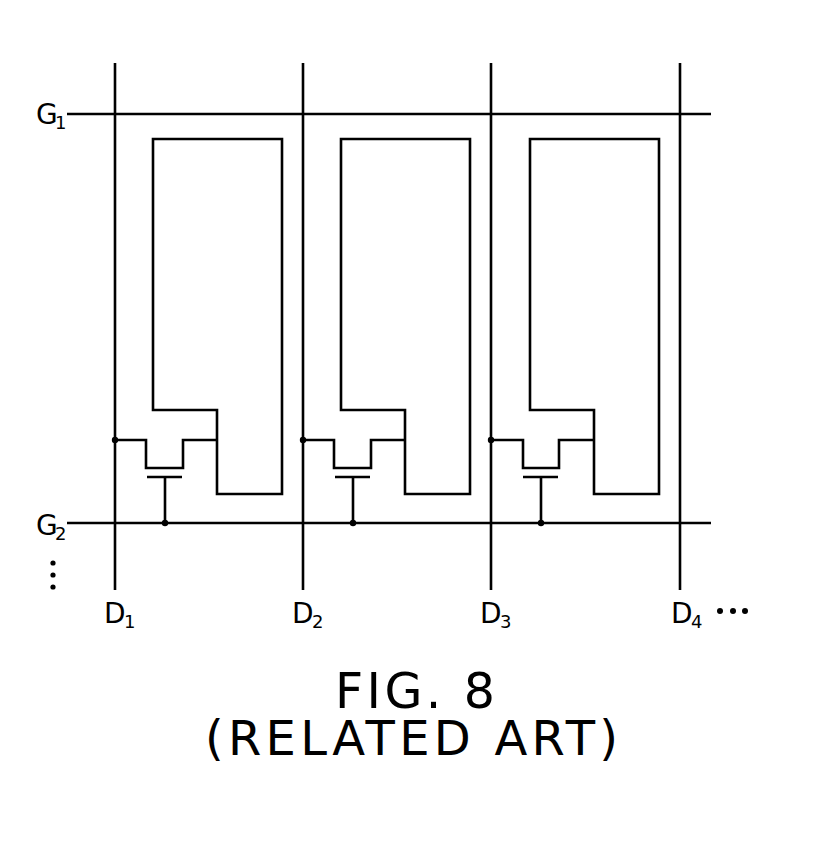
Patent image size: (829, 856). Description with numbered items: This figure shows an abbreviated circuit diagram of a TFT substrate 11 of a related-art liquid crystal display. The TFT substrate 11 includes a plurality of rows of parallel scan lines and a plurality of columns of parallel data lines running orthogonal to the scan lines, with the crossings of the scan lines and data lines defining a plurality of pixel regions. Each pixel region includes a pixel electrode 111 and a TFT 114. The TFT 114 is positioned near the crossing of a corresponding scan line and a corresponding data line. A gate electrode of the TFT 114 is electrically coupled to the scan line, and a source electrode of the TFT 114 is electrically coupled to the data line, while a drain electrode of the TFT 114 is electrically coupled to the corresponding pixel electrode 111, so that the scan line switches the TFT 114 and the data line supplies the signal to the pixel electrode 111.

The TFT substrate 11 is at (437, 26).
The pixel electrode 111 is at (234, 139).
The TFT 114 is at (180, 471).